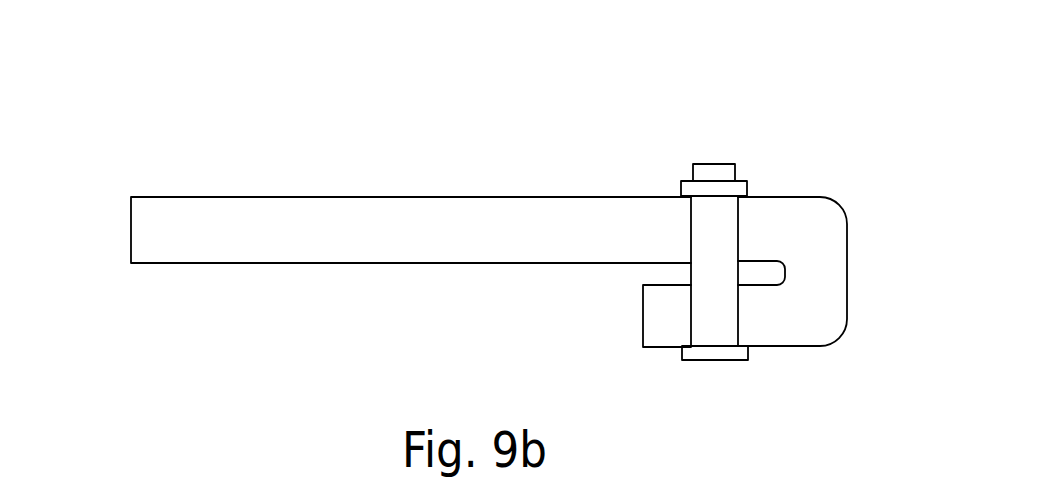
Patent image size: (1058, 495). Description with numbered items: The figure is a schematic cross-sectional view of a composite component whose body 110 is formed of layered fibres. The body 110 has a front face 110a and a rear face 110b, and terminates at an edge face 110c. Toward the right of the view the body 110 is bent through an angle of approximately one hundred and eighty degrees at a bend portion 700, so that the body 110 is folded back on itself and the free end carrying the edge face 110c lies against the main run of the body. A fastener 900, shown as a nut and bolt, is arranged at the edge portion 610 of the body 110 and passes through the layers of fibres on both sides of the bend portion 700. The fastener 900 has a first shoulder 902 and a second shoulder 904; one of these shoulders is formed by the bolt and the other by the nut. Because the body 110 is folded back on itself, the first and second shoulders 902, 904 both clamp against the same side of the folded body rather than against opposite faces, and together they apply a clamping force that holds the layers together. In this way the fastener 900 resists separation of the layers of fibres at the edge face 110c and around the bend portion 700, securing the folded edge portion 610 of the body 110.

The body 110 is at (410, 197).
The front face 110a is at (237, 197).
The rear face 110b is at (317, 263).
The edge face 110c is at (643, 305).
The edge portion 610 is at (777, 229).
The bend portion 700 is at (876, 190).
The fastener 900 is at (722, 163).
The first shoulder 902 is at (750, 195).
The second shoulder 904 is at (750, 348).